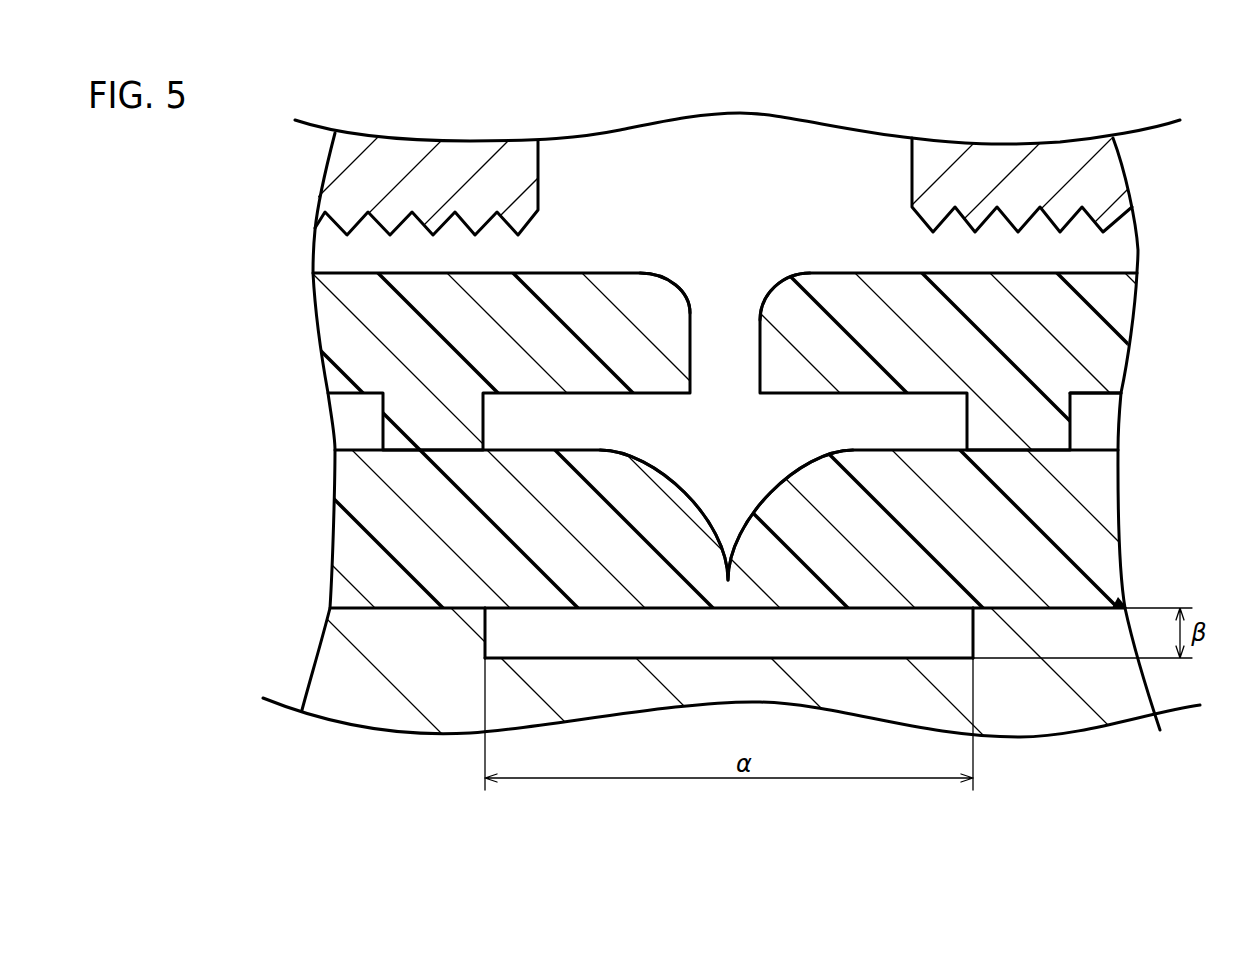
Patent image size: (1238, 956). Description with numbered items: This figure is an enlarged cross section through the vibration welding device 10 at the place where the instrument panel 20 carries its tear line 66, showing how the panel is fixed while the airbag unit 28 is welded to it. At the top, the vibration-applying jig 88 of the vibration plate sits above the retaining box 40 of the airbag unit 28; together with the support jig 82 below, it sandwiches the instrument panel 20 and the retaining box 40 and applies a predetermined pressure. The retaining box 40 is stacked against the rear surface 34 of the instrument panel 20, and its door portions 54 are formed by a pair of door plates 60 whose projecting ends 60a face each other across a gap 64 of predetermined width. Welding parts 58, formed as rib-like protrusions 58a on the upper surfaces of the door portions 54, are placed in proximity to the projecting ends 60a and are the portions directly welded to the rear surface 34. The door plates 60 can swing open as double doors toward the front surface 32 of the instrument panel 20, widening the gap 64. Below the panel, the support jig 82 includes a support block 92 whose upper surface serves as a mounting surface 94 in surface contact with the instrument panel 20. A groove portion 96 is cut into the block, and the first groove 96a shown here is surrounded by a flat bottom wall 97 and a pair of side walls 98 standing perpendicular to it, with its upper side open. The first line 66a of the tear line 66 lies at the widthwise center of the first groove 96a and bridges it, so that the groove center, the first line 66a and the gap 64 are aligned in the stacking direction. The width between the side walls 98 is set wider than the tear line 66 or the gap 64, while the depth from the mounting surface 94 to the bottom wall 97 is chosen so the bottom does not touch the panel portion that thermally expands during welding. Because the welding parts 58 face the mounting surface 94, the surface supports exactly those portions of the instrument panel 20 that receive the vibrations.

The vibration welding device 10 is at (276, 162).
The vibration-applying jig 88 is at (451, 158).
The projecting end 60a is at (663, 283).
The gap 64 is at (722, 327).
The retaining box 40 is at (490, 363).
The airbag unit 28 is at (284, 309).
The door plate 60 is at (974, 363).
The door portion 54 is at (1110, 305).
The protrusion 58a is at (1128, 423).
The welding part 58 is at (1052, 428).
The rear surface 34 is at (548, 449).
The first line 66a is at (726, 502).
The tear line 66 is at (721, 560).
The instrument panel 20 is at (632, 528).
The first groove 96a is at (363, 567).
The groove portion 96 is at (484, 589).
The mounting surface 94 is at (1092, 603).
The side wall 98 is at (486, 641).
The front surface 32 is at (593, 613).
The bottom wall 97 is at (734, 657).
The support jig 82 is at (731, 673).
The support block 92 is at (378, 706).